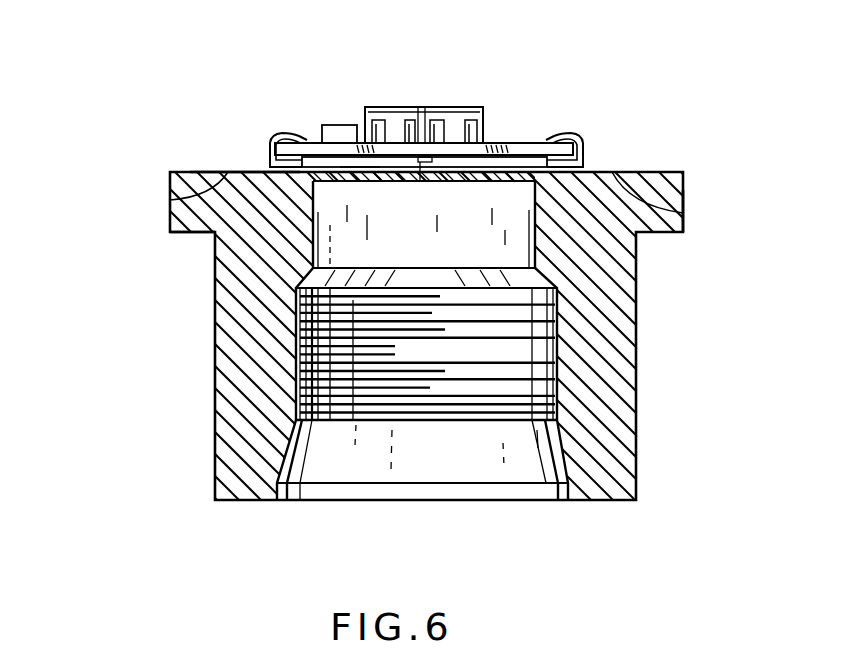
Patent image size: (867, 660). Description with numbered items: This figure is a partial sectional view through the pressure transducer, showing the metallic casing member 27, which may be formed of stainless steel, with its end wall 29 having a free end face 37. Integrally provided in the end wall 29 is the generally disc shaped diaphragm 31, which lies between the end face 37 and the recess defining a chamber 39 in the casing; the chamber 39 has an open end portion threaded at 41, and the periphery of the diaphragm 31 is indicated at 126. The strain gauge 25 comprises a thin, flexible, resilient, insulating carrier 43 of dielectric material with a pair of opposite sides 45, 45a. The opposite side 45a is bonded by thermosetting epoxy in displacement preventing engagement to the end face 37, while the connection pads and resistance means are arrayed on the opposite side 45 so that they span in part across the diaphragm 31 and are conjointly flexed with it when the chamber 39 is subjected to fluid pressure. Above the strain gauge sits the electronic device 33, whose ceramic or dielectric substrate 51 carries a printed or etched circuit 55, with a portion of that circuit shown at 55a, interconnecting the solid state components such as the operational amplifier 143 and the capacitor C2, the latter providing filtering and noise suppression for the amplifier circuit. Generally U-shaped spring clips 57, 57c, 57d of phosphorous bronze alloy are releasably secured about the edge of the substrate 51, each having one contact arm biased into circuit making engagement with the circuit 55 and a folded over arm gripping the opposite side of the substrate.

The strain gauge 25 is at (205, 160).
The metallic casing member 27 is at (647, 363).
The end wall 29 is at (181, 222).
The diaphragm 31 is at (455, 182).
The electronic device 33 is at (490, 98).
The end face 37 is at (180, 199).
The chamber 39 is at (440, 369).
The threaded end portion 41 is at (300, 348).
The carrier 43 is at (229, 170).
The opposite side of carrier 45 is at (628, 171).
The opposite side of carrier 45a is at (683, 212).
The substrate 51 is at (314, 146).
The printed circuit 55 is at (506, 145).
The plate portion 55a is at (357, 174).
The spring clip 57 is at (274, 133).
The spring clip 57c is at (583, 137).
The spring clip 57d is at (421, 185).
The periphery of diaphragm 126 is at (535, 186).
The operational amplifier 143 is at (425, 107).
The capacitor C2 is at (349, 125).